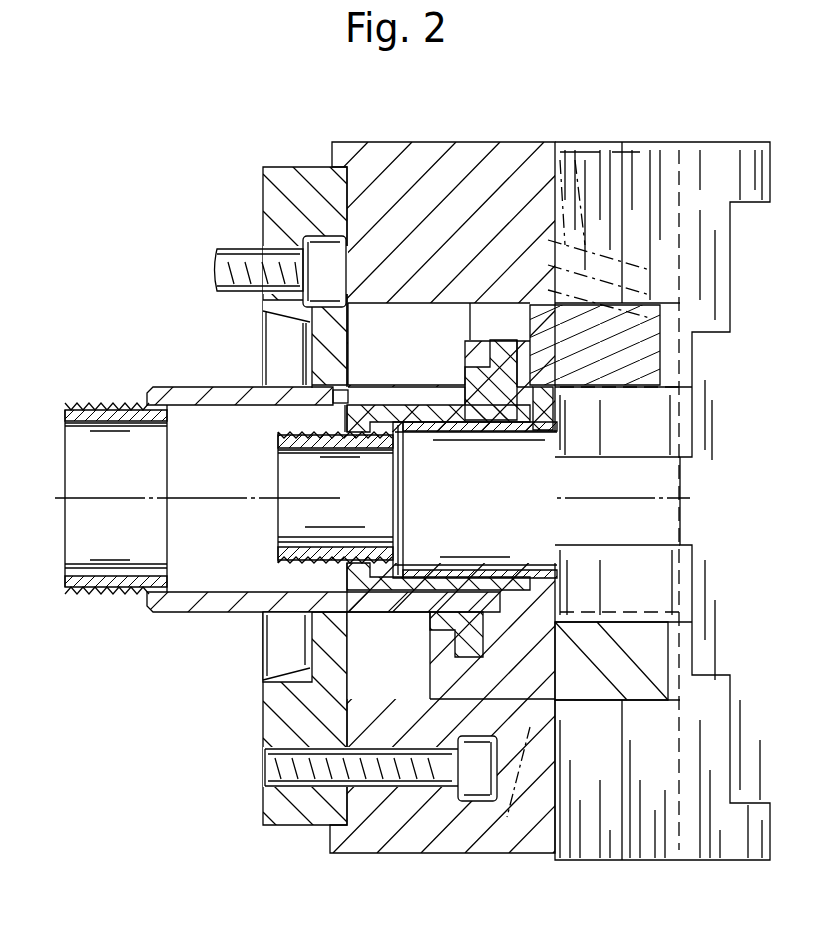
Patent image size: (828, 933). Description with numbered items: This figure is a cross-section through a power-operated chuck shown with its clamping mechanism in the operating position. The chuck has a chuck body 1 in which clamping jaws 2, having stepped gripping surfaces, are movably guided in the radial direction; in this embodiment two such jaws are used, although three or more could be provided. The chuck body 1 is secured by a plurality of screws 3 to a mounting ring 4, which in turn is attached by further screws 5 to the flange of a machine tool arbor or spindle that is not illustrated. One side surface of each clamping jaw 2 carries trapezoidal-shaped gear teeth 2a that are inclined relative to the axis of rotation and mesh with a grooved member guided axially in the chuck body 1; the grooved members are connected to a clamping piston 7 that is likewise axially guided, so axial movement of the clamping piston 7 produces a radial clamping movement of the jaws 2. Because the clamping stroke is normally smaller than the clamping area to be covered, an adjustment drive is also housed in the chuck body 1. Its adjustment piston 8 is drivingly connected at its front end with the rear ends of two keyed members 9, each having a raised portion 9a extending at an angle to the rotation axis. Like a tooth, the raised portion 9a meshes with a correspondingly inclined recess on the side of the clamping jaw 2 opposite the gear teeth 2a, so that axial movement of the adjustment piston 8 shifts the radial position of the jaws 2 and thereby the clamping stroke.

The chuck body 1 is at (470, 152).
The clamping jaws 2 is at (717, 178).
The trapezoidal-shaped gear teeth 2a is at (597, 272).
The screws 3 is at (418, 767).
The mounting ring 4 is at (290, 180).
The screws 5 is at (225, 255).
The clamping piston 7 is at (485, 385).
The adjustment piston 8 is at (478, 638).
The keyed members 9 is at (566, 655).
The raised portion 9a is at (620, 670).